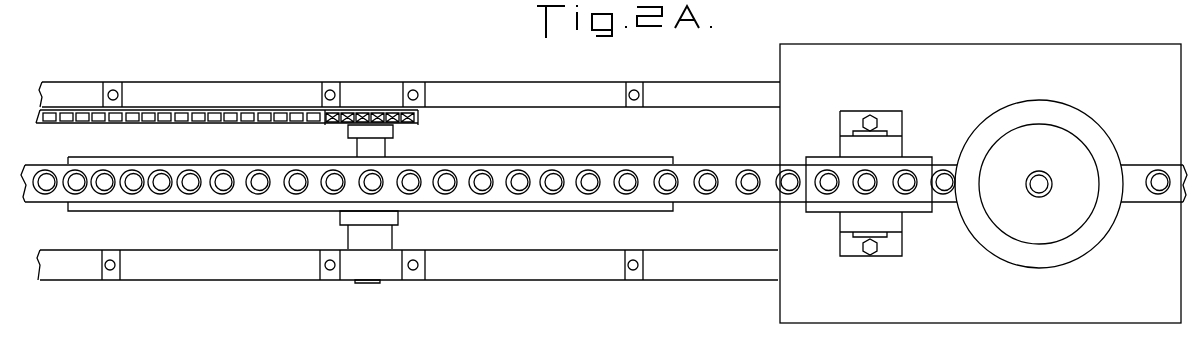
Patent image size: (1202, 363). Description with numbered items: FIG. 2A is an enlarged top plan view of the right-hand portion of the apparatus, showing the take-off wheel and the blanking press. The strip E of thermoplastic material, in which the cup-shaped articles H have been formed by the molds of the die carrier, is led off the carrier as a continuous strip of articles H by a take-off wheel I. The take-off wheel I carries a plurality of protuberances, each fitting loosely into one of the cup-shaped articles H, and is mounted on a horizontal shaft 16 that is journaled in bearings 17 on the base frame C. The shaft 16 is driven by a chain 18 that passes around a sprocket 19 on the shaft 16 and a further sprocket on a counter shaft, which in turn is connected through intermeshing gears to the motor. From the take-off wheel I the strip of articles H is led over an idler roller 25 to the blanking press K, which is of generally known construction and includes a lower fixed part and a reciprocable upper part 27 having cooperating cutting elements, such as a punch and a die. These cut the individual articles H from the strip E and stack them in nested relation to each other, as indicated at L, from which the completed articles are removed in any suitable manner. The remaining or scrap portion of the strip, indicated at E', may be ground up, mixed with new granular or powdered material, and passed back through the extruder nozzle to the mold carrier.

The horizontal shaft 16 is at (357, 143).
The bearings 17 is at (384, 93).
The chain 18 is at (209, 113).
The sprocket 19 is at (418, 125).
The idler roller 25 is at (920, 213).
The reciprocable upper part 27 is at (1085, 158).
The base frame C is at (711, 266).
The strip of thermoplastic material E is at (489, 164).
The scrap portion of the strip E' is at (1154, 213).
The cup-shaped articles H is at (580, 172).
The take-off wheel I is at (615, 157).
The blanking press K is at (1012, 118).
The stack of nested articles L is at (1045, 178).